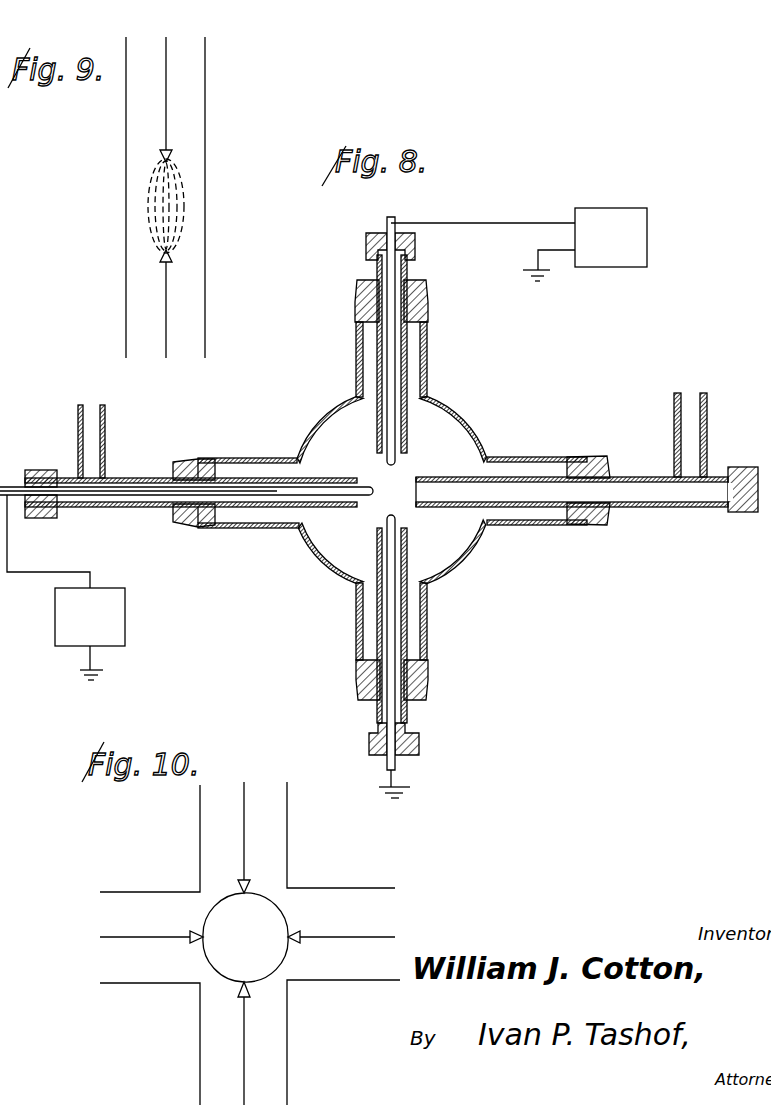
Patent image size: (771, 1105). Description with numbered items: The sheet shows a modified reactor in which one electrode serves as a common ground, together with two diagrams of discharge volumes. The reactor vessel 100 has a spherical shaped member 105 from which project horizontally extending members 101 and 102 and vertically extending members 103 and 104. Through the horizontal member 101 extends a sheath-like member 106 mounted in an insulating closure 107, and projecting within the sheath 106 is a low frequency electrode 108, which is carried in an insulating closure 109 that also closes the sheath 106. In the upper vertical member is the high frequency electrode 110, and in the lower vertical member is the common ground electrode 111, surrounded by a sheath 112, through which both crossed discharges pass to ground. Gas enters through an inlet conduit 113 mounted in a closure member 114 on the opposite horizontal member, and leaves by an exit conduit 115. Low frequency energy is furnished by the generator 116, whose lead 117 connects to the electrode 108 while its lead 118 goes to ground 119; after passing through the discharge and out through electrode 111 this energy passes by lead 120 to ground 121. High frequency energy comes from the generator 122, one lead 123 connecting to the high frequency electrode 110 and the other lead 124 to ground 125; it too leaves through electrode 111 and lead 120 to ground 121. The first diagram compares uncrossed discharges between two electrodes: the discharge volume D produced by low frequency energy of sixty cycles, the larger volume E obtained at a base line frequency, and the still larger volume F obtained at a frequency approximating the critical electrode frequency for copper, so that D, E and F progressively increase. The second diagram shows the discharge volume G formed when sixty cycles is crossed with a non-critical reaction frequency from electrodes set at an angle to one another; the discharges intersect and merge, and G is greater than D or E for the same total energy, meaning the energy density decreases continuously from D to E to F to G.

In FIG. 8, the reactor vessel 100 is at (294, 448).
In FIG. 8, the horizontally extending member 101 is at (247, 445).
In FIG. 8, the horizontally extending member 102 is at (535, 456).
In FIG. 8, the vertically extending member 103 is at (428, 325).
In FIG. 8, the vertically extending member 104 is at (356, 626).
In FIG. 8, the spherical shaped member 105 is at (452, 414).
In FIG. 8, the sheath-like member 106 is at (145, 465).
In FIG. 8, the insulating closure 107 is at (182, 524).
In FIG. 8, the low frequency electrode 108 is at (273, 497).
In FIG. 8, the insulating closure 109 is at (40, 459).
In FIG. 8, the high frequency electrode 110 is at (392, 338).
In FIG. 8, the common ground electrode 111 is at (394, 620).
In FIG. 8, the sheath 112 is at (406, 645).
In FIG. 8, the inlet conduit 113 is at (697, 397).
In FIG. 8, the closure member 114 is at (604, 523).
In FIG. 8, the exit conduit 115 is at (106, 425).
In FIG. 8, the generator 116 is at (123, 596).
In FIG. 8, the lead 117 is at (58, 572).
In FIG. 8, the lead 118 is at (96, 656).
In FIG. 8, the ground 119 is at (97, 683).
In FIG. 8, the lead 120 is at (397, 771).
In FIG. 8, the ground 121 is at (407, 793).
In FIG. 8, the generator 122 is at (653, 232).
In FIG. 8, the lead 123 is at (511, 221).
In FIG. 8, the lead 124 is at (540, 248).
In FIG. 8, the ground 125 is at (550, 281).
In FIG. 9, the low frequency discharge volume D is at (170, 190).
In FIG. 9, the base line frequency discharge volume E is at (180, 217).
In FIG. 9, the critical frequency discharge volume F is at (150, 200).
In FIG. 10, the crossed discharge volume G is at (254, 930).